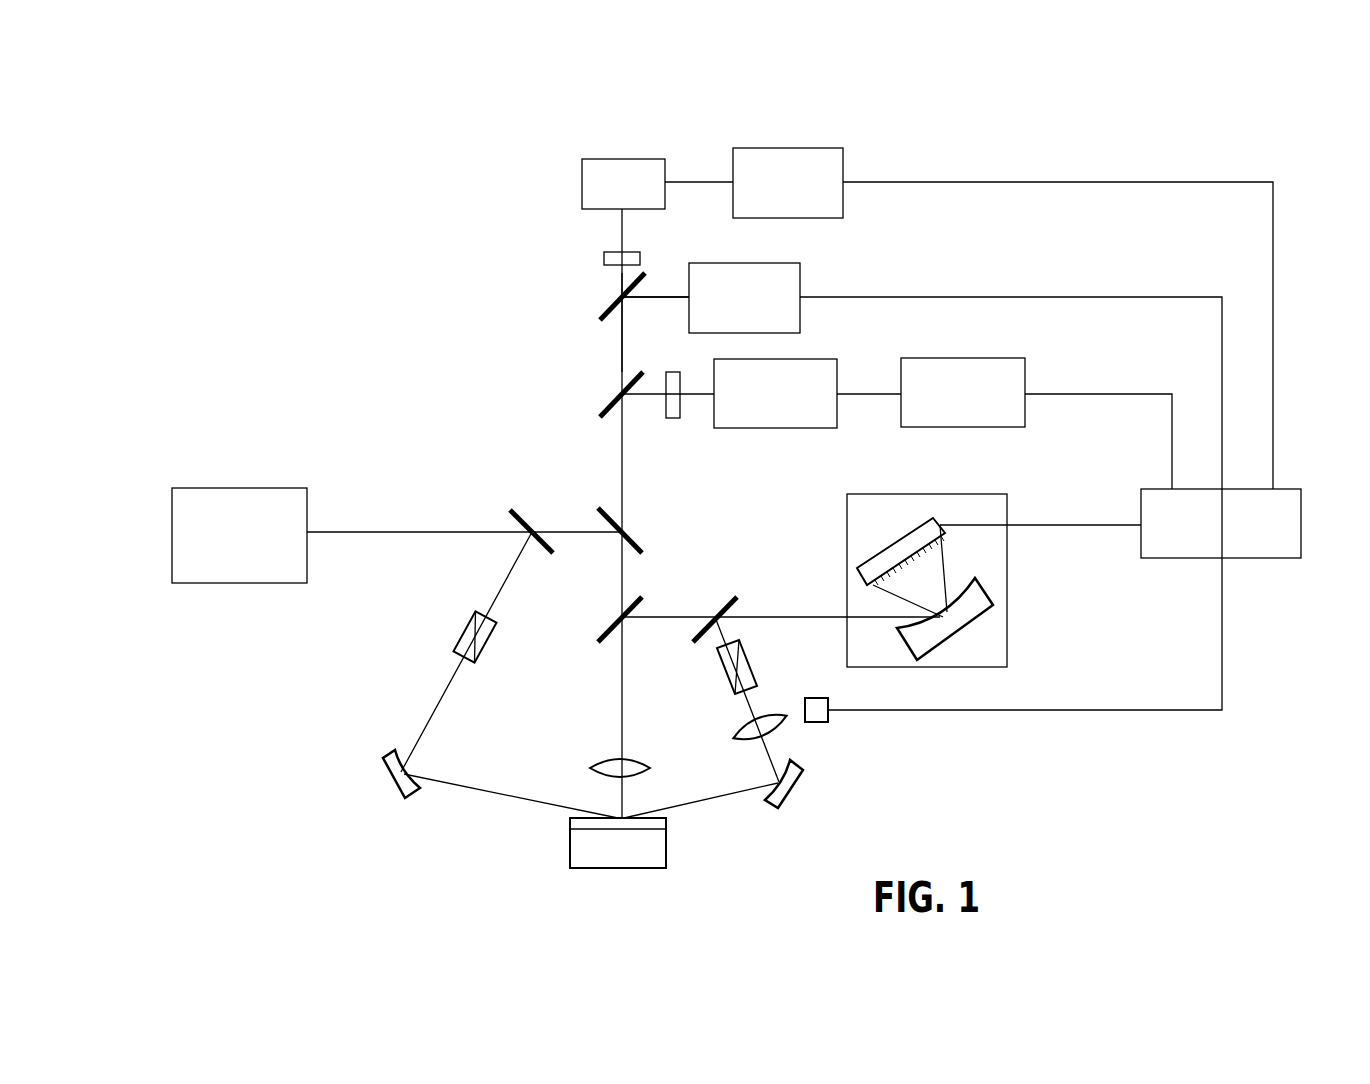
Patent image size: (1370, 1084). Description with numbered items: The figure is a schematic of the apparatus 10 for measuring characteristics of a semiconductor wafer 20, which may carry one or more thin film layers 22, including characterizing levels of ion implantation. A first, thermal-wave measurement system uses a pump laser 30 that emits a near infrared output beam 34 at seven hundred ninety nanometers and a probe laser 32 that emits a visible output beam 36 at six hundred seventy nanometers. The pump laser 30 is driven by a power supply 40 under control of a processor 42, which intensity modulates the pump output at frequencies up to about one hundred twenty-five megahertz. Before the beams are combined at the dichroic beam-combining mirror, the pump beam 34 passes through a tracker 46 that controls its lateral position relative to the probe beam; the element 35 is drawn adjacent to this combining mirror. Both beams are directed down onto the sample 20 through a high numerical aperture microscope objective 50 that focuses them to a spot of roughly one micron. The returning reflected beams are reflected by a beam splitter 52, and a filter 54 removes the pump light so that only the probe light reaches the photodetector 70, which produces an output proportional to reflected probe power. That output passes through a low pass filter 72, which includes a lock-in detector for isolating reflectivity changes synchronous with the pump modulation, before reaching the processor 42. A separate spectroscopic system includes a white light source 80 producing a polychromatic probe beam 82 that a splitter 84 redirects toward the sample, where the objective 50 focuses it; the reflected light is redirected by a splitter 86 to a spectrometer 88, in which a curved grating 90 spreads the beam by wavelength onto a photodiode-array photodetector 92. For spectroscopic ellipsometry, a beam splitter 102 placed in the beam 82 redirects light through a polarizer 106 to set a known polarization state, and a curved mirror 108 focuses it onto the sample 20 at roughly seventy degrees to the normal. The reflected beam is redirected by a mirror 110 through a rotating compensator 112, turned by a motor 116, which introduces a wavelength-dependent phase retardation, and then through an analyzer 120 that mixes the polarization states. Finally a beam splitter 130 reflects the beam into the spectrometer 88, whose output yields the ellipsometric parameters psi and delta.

The apparatus 10 is at (1270, 132).
The semiconductor wafer 20 is at (666, 850).
The thin film layer 22 is at (666, 820).
The pump laser 30 is at (643, 158).
The probe laser 32 is at (800, 272).
The near infrared output beam 34 is at (610, 306).
The pump beam 35 is at (645, 282).
The visible output beam 36 is at (660, 298).
The power supply 40 is at (830, 148).
The processor 42 is at (1293, 488).
The tracker 46 is at (604, 258).
The microscope objective 50 is at (632, 762).
The beam splitter 52 is at (608, 405).
The filter 54 is at (673, 419).
The detector 70 is at (823, 358).
The low pass filter 72 is at (1005, 357).
The white light source 80 is at (232, 487).
The polychromatic probe beam 82 is at (394, 531).
The splitter 84 is at (638, 545).
The splitter 86 is at (642, 600).
The spectrometer 88 is at (1007, 580).
The curved grating 90 is at (963, 612).
The photodetector 92 is at (935, 518).
The beam splitter 102 is at (526, 512).
The polarizer 106 is at (497, 640).
The curved mirror 108 is at (384, 760).
The mirror 110 is at (805, 772).
The rotating compensator 112 is at (785, 725).
The motor 116 is at (815, 698).
The analyzer 120 is at (718, 658).
The beam splitter 130 is at (737, 600).